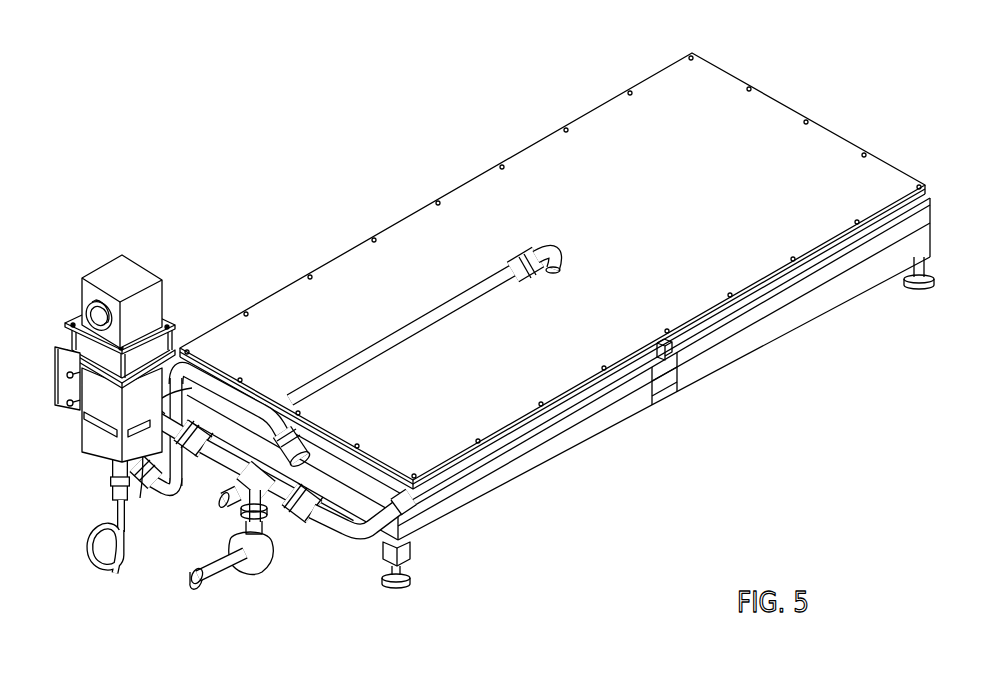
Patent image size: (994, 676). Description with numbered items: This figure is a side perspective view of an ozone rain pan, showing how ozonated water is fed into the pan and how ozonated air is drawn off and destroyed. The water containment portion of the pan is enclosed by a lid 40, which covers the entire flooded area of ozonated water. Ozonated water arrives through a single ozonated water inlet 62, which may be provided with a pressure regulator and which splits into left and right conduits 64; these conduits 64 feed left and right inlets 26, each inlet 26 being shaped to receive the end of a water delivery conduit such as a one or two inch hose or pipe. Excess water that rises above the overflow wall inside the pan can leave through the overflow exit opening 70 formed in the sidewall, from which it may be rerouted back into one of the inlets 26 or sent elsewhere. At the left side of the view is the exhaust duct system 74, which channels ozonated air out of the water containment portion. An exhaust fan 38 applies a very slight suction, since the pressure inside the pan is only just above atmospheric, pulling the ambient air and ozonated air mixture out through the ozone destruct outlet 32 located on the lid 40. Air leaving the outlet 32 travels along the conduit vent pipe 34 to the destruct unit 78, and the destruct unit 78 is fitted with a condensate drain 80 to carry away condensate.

The inlet 26 is at (118, 485).
The ozone destruct outlet 32 is at (565, 256).
The conduit vent pipe 34 is at (400, 328).
The exhaust fan 38 is at (76, 362).
The lid 40 is at (655, 120).
The ozonated water inlet 62 is at (213, 584).
The conduit 64 is at (213, 460).
The overflow exit opening 70 is at (297, 437).
The exhaust duct system 74 is at (188, 248).
The destruct unit 78 is at (102, 408).
The condensate drain 80 is at (98, 560).